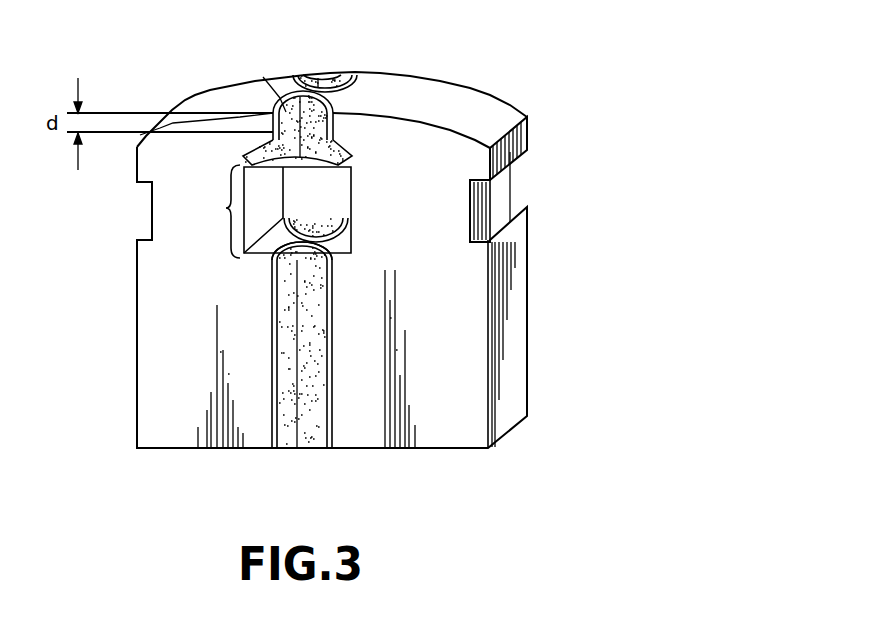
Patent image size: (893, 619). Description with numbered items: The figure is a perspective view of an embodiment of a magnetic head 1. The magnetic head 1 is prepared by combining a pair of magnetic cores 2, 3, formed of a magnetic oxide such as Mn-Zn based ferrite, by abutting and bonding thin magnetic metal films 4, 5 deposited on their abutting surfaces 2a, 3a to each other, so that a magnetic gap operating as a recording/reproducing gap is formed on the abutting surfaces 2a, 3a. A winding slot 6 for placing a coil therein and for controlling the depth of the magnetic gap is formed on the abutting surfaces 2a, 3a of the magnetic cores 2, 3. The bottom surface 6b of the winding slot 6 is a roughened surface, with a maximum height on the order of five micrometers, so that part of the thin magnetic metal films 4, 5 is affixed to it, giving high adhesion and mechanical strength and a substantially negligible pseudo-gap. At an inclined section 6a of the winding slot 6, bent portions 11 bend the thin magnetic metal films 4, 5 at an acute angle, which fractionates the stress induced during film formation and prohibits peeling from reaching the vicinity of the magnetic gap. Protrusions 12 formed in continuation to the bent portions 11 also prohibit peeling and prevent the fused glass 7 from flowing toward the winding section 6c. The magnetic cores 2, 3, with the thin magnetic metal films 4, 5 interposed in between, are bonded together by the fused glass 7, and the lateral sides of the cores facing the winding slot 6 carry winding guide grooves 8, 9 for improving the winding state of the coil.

The magnetic head 1 is at (533, 90).
The magnetic core 2 is at (153, 382).
The abutting surface 2a is at (300, 300).
The magnetic core 3 is at (428, 420).
The abutting surface 3a is at (300, 383).
The thin magnetic metal film 4 is at (262, 78).
The thin magnetic metal film 5 is at (333, 110).
The winding slot 6 is at (352, 235).
The inclined section of the winding slot 6a is at (268, 151).
The bottom surface of the winding slot 6b is at (272, 262).
The winding section 6c is at (226, 208).
The fused glass 7 is at (315, 82).
The winding guide groove 8 is at (148, 228).
The winding guide groove 9 is at (307, 93).
The bent portion 11 is at (345, 142).
The protrusion 12 is at (233, 183).